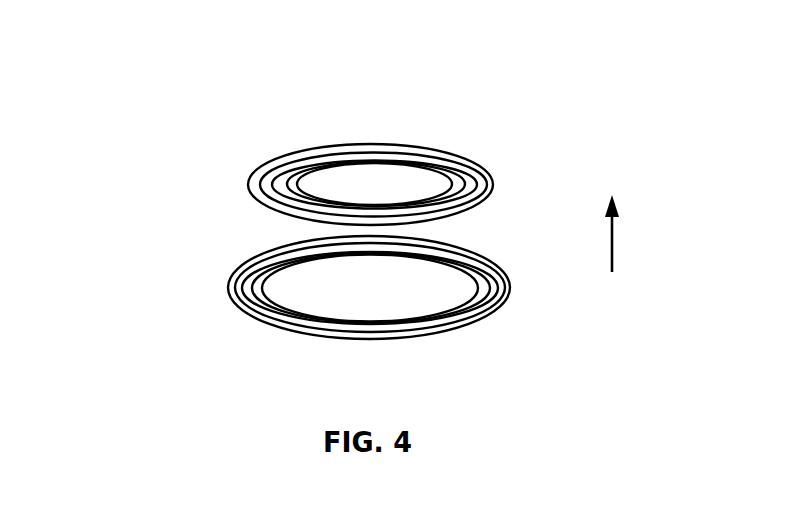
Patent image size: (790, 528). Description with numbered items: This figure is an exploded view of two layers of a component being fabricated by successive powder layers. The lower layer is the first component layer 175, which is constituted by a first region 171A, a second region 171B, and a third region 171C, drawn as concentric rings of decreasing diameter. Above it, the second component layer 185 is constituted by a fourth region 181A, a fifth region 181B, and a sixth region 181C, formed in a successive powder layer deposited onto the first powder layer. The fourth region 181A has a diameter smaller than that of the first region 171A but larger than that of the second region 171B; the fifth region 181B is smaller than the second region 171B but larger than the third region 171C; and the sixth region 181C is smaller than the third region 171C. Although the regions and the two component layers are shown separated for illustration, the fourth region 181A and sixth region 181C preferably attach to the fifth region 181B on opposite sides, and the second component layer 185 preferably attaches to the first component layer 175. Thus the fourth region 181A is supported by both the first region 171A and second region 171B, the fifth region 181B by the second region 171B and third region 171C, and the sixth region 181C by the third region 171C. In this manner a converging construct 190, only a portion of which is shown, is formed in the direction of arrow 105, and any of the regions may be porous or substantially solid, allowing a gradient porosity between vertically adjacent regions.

The converging construct 190 is at (132, 48).
The second component layer 185 is at (282, 124).
The fourth region 181A is at (492, 192).
The fifth region 181B is at (472, 177).
The sixth region 181C is at (417, 160).
The first component layer 175 is at (220, 224).
The first region 171A is at (228, 287).
The second region 171B is at (240, 300).
The third region 171C is at (443, 315).
The arrow 105 is at (613, 248).